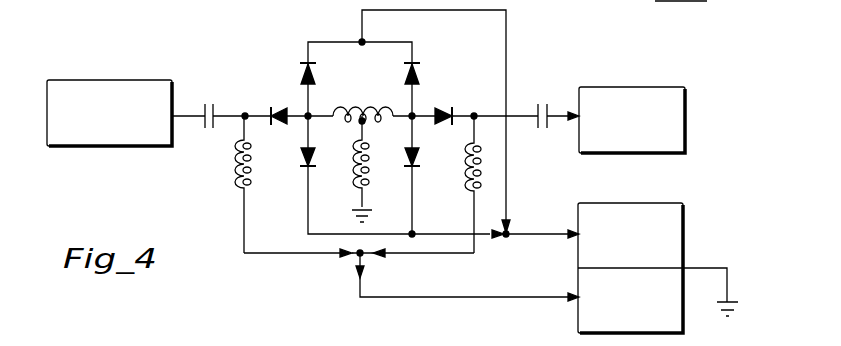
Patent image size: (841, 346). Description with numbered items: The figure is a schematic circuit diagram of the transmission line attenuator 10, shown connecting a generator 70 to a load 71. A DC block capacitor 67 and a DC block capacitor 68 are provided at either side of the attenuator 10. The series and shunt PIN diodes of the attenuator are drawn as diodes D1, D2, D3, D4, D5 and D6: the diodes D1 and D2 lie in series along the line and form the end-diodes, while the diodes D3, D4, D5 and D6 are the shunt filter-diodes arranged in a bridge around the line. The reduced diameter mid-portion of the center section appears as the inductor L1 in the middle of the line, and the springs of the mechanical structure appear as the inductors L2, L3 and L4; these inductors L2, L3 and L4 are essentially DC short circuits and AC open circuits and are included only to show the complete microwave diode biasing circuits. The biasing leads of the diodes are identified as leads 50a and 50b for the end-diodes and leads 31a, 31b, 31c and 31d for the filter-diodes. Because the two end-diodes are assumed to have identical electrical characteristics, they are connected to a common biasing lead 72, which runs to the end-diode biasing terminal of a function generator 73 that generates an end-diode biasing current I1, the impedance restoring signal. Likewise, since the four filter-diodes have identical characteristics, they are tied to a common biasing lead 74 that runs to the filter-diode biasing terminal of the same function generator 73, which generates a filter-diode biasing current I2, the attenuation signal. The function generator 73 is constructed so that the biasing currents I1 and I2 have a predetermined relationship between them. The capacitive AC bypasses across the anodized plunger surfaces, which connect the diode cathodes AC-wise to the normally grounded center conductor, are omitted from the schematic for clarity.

The generator 70 is at (138, 81).
The load 71 is at (640, 87).
The function generator 73 is at (648, 203).
The transmission line attenuator 10 is at (226, 109).
The DC block capacitor 67 is at (201, 119).
The DC block capacitor 68 is at (551, 127).
The end-diode D1 is at (284, 98).
The end-diode D2 is at (448, 100).
The filter-diode D3 is at (316, 77).
The filter-diode D4 is at (300, 156).
The filter-diode D5 is at (418, 78).
The filter-diode D6 is at (416, 177).
The inductor L1 is at (354, 108).
The inductor L2 is at (354, 145).
The inductor L3 is at (236, 171).
The inductor L4 is at (491, 145).
The diode biasing lead 31a is at (308, 52).
The diode biasing lead 31b is at (308, 218).
The diode biasing lead 31c is at (412, 52).
The diode biasing lead 31d is at (412, 218).
The diode biasing lead 50a is at (244, 249).
The diode biasing lead 50b is at (473, 253).
The common biasing lead 72 is at (427, 297).
The common biasing lead 74 is at (533, 233).
The end-diode biasing current I1 is at (533, 315).
The filter-diode biasing current I2 is at (540, 253).